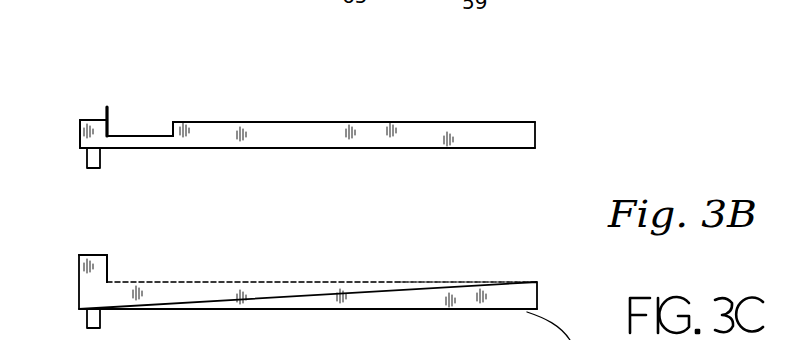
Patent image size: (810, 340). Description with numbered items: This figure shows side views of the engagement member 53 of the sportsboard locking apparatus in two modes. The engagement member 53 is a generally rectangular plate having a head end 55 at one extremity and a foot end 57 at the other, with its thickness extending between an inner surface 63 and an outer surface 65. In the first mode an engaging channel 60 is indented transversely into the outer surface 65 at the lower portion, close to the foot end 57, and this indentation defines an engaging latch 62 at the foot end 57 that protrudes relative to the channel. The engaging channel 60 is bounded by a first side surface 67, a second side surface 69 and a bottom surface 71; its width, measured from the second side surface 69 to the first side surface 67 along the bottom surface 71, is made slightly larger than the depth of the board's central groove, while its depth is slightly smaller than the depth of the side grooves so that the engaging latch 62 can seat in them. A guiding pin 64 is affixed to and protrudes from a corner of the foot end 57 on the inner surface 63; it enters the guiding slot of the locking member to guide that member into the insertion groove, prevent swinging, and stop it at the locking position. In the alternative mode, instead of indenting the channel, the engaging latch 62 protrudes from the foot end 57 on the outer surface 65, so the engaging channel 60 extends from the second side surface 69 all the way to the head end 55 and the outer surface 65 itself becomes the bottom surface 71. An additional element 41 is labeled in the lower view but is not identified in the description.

In FIG. 3C, the cover member 41 is at (422, 339).
In FIG. 3C, the engagement member 53 is at (318, 303).
In FIG. 3B, the head end 55 is at (535, 128).
In FIG. 3C, the head end 55 is at (537, 287).
In FIG. 3B, the foot end 57 is at (80, 128).
In FIG. 3C, the foot end 57 is at (80, 287).
In FIG. 3B, the engaging channel 60 is at (153, 110).
In FIG. 3B, the engaging latch 62 is at (98, 118).
In FIG. 3C, the engaging latch 62 is at (100, 255).
In FIG. 3B, the inner surface 63 is at (492, 149).
In FIG. 3B, the guiding pin 64 is at (85, 153).
In FIG. 3C, the guiding pin 64 is at (85, 314).
In FIG. 3B, the outer surface 65 is at (467, 122).
In FIG. 3C, the outer surface 65 is at (507, 281).
In FIG. 3B, the first side surface 67 is at (172, 122).
In FIG. 3B, the second side surface 69 is at (107, 107).
In FIG. 3C, the second side surface 69 is at (107, 270).
In FIG. 3B, the bottom surface 71 is at (142, 135).
In FIG. 3C, the bottom surface 71 is at (217, 281).